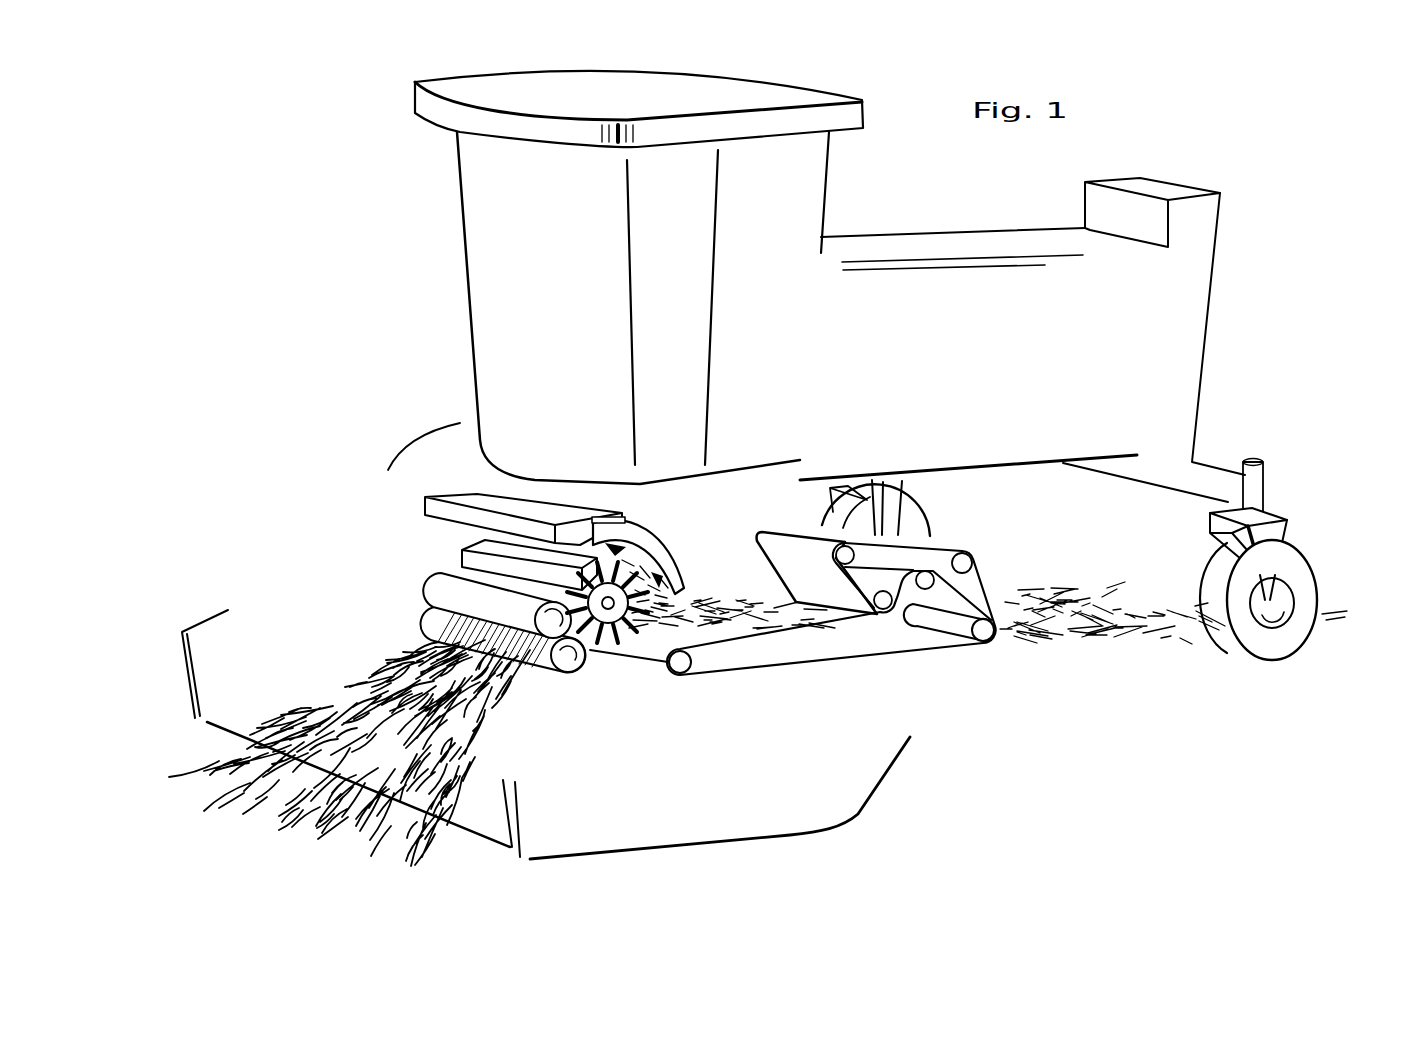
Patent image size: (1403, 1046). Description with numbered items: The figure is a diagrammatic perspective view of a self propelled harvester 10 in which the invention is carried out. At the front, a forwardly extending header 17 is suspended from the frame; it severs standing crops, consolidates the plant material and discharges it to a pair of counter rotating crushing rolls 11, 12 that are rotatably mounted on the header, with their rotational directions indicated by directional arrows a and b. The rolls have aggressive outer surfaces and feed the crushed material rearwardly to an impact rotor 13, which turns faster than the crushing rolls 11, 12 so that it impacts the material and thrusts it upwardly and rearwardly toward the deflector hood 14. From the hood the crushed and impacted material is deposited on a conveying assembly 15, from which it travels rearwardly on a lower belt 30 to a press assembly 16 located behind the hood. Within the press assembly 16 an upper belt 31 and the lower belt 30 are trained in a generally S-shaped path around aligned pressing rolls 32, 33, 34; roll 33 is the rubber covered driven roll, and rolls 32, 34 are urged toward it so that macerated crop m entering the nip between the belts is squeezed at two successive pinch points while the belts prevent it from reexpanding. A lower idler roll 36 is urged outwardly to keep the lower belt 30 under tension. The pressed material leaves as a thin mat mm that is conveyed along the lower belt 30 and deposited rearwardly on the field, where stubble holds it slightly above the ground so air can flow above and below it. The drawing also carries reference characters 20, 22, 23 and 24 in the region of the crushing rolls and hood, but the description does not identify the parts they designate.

The self propelled harvester 10 is at (390, 226).
The crushing roll 11 is at (423, 580).
The crushing roll 12 is at (433, 618).
The impact rotor 13 is at (672, 670).
The deflector hood 14 is at (660, 528).
The conveying assembly 15 is at (735, 585).
The press assembly 16 is at (947, 528).
The header 17 is at (277, 665).
The rotary brush 20 is at (624, 658).
The guide 22 is at (593, 522).
The deflector 23 is at (657, 550).
The bar 24 is at (462, 558).
The lower belt 30 is at (780, 647).
The upper belt 31 is at (807, 530).
The pressing roll 32 is at (882, 602).
The driven pressing roll 33 is at (925, 582).
The pressing roll 34 is at (963, 567).
The lower idler roll 36 is at (947, 630).
The directional arrow a is at (577, 675).
The directional arrow b is at (540, 613).
The macerated crop m is at (738, 625).
The mat mm is at (1073, 603).